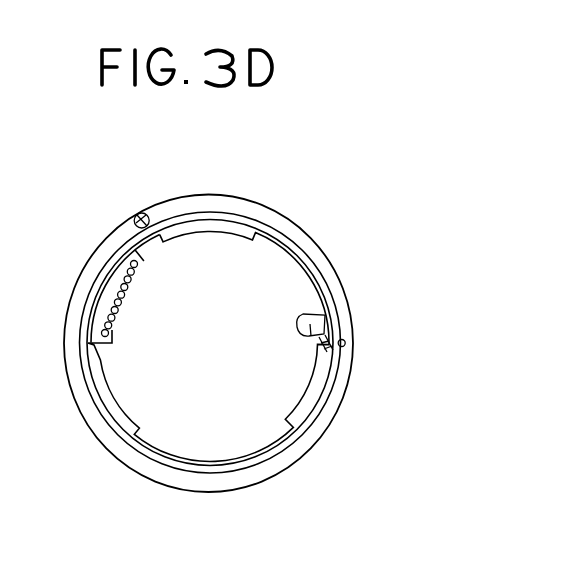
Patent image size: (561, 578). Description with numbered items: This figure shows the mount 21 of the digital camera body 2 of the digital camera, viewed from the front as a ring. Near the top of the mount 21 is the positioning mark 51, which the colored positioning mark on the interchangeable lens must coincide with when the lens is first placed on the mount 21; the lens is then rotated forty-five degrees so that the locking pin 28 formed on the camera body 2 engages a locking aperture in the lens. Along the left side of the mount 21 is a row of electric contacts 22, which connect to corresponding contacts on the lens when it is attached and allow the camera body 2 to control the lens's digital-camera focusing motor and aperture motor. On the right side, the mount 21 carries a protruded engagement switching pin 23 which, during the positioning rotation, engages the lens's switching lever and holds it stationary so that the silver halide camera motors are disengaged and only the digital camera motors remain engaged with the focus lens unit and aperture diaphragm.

The digital camera body 2 is at (328, 259).
The mount 21 is at (223, 206).
The electric contacts 22 is at (114, 296).
The engagement switching pin 23 is at (318, 344).
The locking pin 28 is at (345, 340).
The positioning mark 51 is at (140, 212).